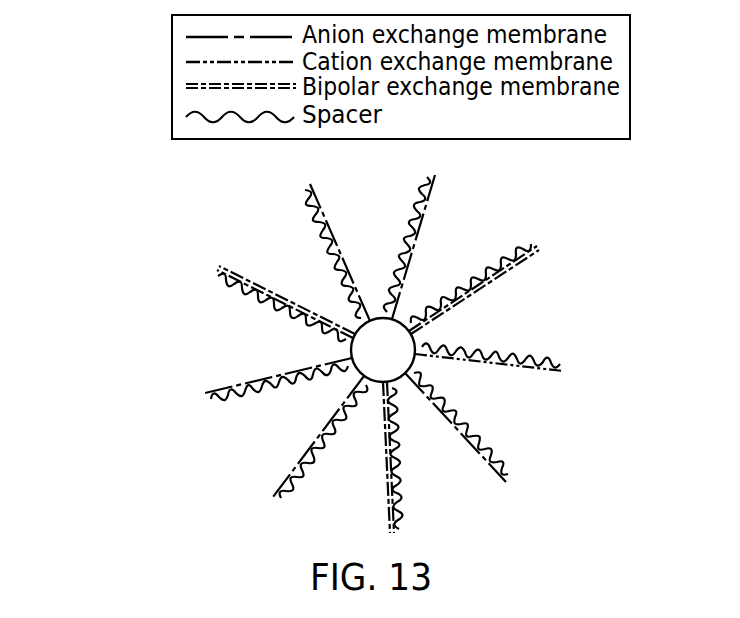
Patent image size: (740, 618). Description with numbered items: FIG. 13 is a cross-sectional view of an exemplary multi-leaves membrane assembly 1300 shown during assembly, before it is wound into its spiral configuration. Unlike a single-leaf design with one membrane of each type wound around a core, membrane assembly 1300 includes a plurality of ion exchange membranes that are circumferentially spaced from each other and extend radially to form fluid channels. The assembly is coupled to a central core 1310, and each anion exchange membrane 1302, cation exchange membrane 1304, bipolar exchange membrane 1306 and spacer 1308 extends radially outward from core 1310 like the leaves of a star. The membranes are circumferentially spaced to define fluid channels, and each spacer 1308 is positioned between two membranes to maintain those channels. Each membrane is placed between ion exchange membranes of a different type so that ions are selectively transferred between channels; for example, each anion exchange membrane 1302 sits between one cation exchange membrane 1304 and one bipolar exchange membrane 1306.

The multi-leaves membrane assembly 1300 is at (164, 205).
The anion exchange membrane 1302 is at (440, 198).
The cation exchange membrane 1304 is at (338, 252).
The bipolar exchange membrane 1306 is at (522, 262).
The spacer 1308 is at (508, 257).
The core 1310 is at (401, 361).